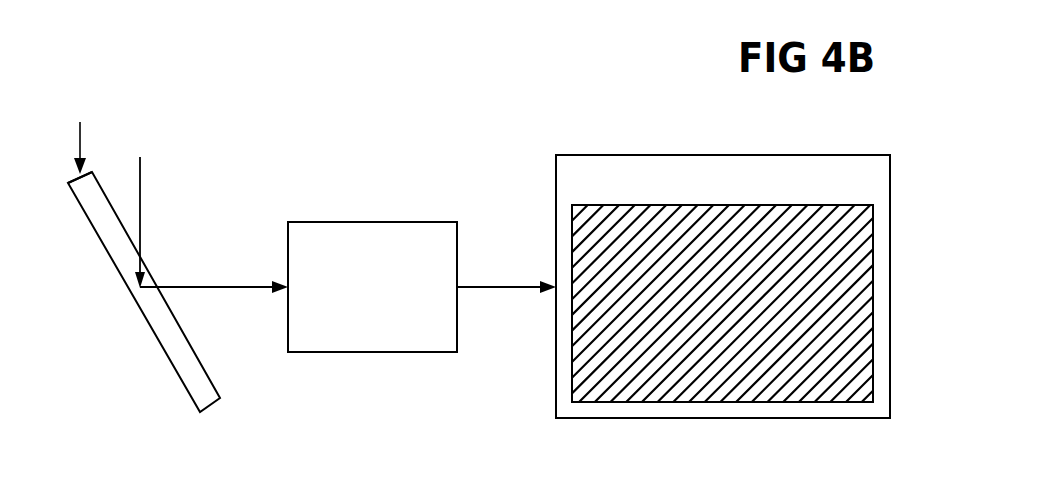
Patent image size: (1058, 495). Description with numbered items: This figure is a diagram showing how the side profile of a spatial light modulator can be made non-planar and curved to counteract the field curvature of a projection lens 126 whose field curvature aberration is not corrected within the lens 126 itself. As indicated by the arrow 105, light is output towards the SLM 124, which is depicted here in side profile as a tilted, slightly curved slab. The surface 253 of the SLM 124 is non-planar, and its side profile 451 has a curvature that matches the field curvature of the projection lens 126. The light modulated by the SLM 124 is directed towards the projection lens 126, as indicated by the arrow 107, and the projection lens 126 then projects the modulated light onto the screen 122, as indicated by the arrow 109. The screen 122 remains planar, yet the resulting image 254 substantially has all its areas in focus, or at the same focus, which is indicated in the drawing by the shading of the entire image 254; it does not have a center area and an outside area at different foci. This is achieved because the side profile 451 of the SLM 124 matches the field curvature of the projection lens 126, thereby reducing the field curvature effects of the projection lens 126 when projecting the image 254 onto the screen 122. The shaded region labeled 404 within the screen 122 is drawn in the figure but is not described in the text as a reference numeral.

The arrow 105 is at (140, 187).
The arrow 107 is at (223, 284).
The arrow 109 is at (500, 286).
The screen 122 is at (878, 188).
The SLM 124 is at (157, 322).
The projection lens 126 is at (390, 325).
The surface 253 is at (90, 169).
The image 254 is at (622, 403).
The image area 404 is at (865, 238).
The side profile 451 is at (80, 137).